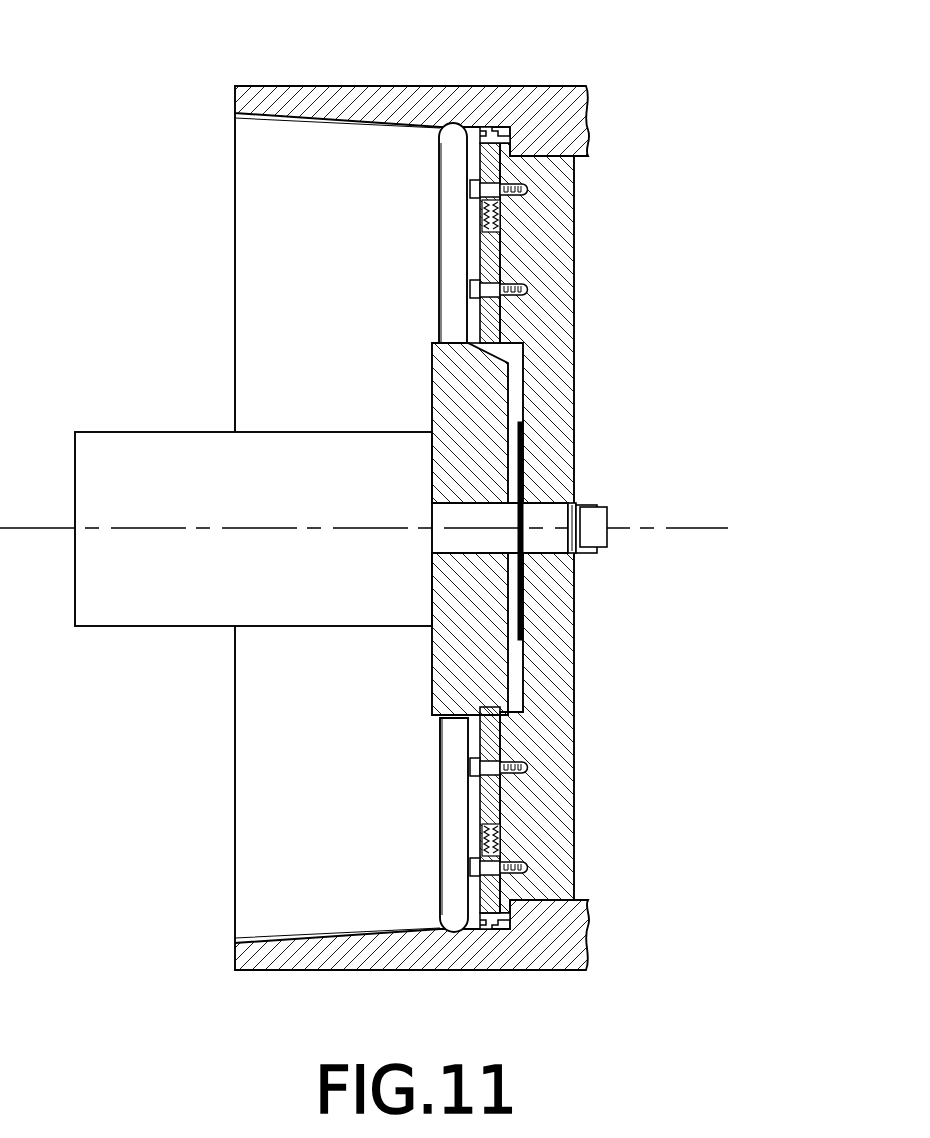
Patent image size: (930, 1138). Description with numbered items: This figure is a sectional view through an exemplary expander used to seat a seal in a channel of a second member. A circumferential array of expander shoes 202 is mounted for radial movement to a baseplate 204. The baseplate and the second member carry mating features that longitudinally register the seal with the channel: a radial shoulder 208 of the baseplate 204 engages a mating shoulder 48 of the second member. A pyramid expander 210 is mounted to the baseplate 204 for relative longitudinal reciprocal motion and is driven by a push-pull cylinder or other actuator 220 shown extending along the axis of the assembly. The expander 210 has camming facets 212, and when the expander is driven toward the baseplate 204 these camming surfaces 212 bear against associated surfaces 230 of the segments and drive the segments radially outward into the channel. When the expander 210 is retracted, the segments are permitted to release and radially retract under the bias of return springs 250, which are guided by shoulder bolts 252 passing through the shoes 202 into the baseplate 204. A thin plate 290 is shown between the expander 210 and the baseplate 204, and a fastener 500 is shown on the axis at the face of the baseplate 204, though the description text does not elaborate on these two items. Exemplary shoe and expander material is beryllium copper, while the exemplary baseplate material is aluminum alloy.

The mating shoulder 48 is at (510, 136).
The expander shoe 202 is at (487, 258).
The baseplate 204 is at (550, 245).
The radial shoulder 208 is at (513, 148).
The expander 210 is at (465, 665).
The camming facets 212 is at (472, 719).
The actuator 220 is at (138, 457).
The associated surfaces 230 is at (465, 714).
The return springs 250 is at (481, 215).
The shoulder bolts 252 is at (472, 188).
The disc 290 is at (520, 433).
The bolt 500 is at (702, 527).